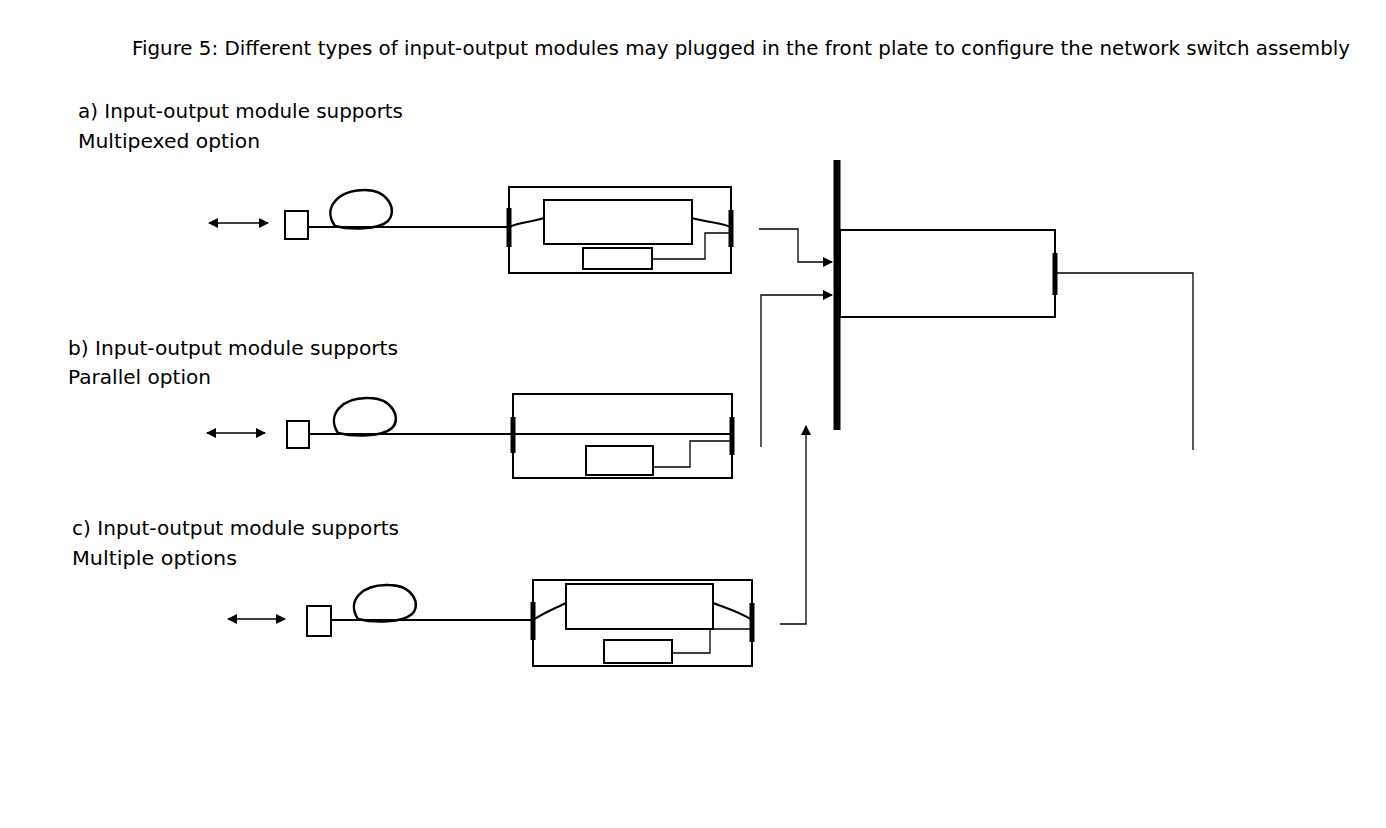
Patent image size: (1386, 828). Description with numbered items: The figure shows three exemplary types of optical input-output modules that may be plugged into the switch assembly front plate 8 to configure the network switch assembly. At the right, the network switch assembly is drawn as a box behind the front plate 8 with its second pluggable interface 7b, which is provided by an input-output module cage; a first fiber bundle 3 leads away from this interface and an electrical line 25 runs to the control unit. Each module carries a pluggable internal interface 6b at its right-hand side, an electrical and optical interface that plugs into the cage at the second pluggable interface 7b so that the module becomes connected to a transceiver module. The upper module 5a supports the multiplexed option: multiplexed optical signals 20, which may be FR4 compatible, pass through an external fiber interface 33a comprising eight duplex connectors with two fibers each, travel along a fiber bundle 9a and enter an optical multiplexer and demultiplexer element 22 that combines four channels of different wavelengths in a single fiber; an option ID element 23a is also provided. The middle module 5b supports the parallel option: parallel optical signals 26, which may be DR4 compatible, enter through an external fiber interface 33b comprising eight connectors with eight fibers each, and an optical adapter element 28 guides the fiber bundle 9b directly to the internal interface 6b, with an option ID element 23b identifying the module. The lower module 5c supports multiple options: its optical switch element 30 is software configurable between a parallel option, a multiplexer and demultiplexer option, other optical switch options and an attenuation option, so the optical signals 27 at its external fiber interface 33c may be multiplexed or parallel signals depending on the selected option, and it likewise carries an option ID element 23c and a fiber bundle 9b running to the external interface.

The first fiber bundle 3 is at (1182, 258).
The optical input-output module supporting multiplexed option 5a is at (683, 188).
The optical input-output module supporting parallel option 5b is at (663, 394).
The optical input-output module supporting multiple options 5c is at (683, 580).
The pluggable internal interface of the input-output module 6b is at (733, 228).
The second pluggable interface of the base module 7b is at (1060, 267).
The switch assembly front plate 8 is at (843, 283).
The fiber bundle of the input-output module 9a is at (386, 230).
The fiber bundle of the input-output module 9b is at (390, 438).
The multiplexed optical signal 20 is at (237, 207).
The optical multiplexer and demultiplexer element 22 is at (567, 218).
The option ID 23a is at (612, 272).
The option ID 23b is at (617, 462).
The option ID 23c is at (630, 666).
The electrical line to control unit 25 is at (1193, 365).
The parallel optical signals 26 is at (234, 417).
The optionally multiplexed or parallel optical signals 27 is at (255, 604).
The optical adapter element 28 is at (586, 435).
The optical switch element 30 is at (612, 618).
The external fiber interface 33a is at (298, 222).
The external fiber interface 33b is at (300, 432).
The external fiber interface 33c is at (318, 616).